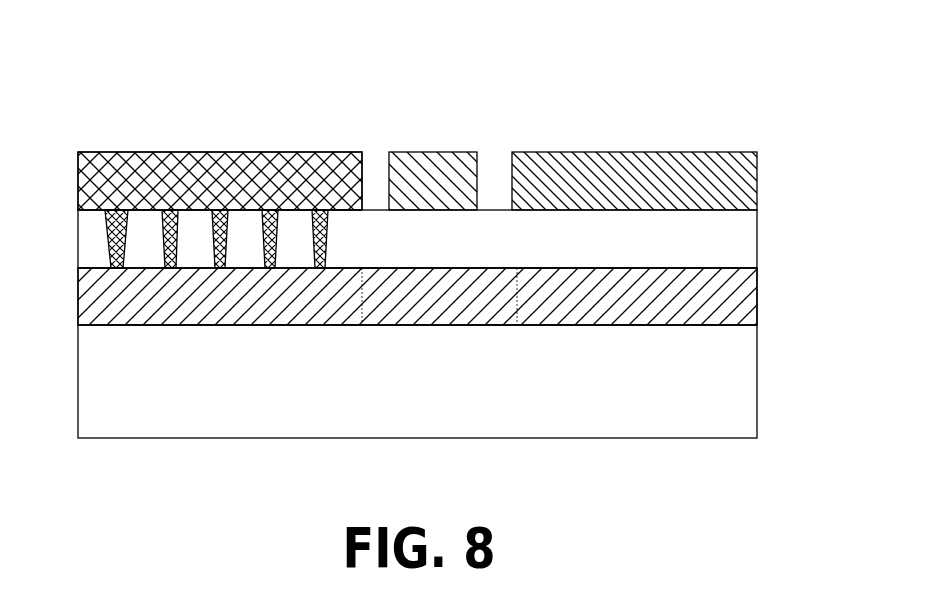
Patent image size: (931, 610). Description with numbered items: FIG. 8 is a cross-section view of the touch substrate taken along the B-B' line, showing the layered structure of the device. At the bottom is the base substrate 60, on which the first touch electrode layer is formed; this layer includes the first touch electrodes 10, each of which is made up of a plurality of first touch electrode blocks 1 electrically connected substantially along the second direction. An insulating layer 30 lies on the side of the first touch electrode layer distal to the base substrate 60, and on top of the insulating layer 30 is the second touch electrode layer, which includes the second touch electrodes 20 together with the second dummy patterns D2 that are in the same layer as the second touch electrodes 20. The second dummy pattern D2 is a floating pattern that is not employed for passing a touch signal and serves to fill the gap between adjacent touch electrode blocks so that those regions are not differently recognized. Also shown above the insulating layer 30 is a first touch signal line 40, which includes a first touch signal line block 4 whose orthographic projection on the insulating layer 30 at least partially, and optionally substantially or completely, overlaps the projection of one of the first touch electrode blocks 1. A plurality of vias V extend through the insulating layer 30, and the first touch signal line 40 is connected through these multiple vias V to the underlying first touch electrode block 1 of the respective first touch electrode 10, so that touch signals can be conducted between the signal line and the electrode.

The base substrate 60 is at (757, 383).
The first touch electrode 10 is at (757, 298).
The first touch electrode block 1 is at (417, 298).
The insulating layer 30 is at (757, 237).
The via V is at (106, 236).
The first touch signal line 40 is at (233, 152).
The first touch signal line block 4 is at (220, 181).
The second touch electrode 20 is at (433, 152).
The second dummy pattern D2 is at (634, 181).